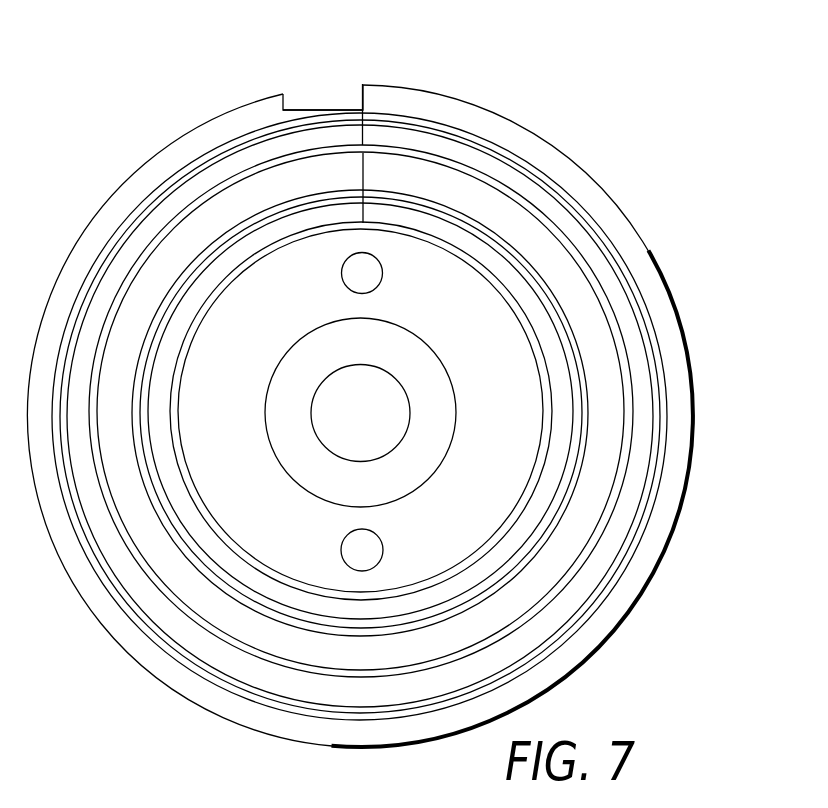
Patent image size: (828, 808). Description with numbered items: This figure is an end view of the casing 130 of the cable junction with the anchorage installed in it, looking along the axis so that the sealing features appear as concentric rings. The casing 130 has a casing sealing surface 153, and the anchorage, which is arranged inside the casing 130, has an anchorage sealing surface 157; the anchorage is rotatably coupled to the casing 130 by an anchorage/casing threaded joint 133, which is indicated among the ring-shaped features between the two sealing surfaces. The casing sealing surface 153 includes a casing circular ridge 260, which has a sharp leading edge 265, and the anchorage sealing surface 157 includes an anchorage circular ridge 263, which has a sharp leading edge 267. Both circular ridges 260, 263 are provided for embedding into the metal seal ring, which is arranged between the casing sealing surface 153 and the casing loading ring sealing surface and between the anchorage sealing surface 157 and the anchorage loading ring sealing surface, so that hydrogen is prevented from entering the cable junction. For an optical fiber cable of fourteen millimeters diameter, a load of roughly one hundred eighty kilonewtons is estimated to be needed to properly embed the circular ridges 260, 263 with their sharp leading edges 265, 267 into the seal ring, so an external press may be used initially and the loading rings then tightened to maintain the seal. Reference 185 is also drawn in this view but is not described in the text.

The casing 130 is at (332, 82).
The casing sealing surface 153 is at (325, 111).
The casing circular ridge 260 is at (448, 108).
The sharp leading edge 265 is at (527, 164).
The anchorage/casing threaded joint 133 is at (535, 215).
The anchorage circular ridge 263 is at (565, 296).
The anchorage sealing surface 157 is at (362, 187).
The sharp leading edge 267 is at (573, 468).
The shoulder 185 is at (518, 510).